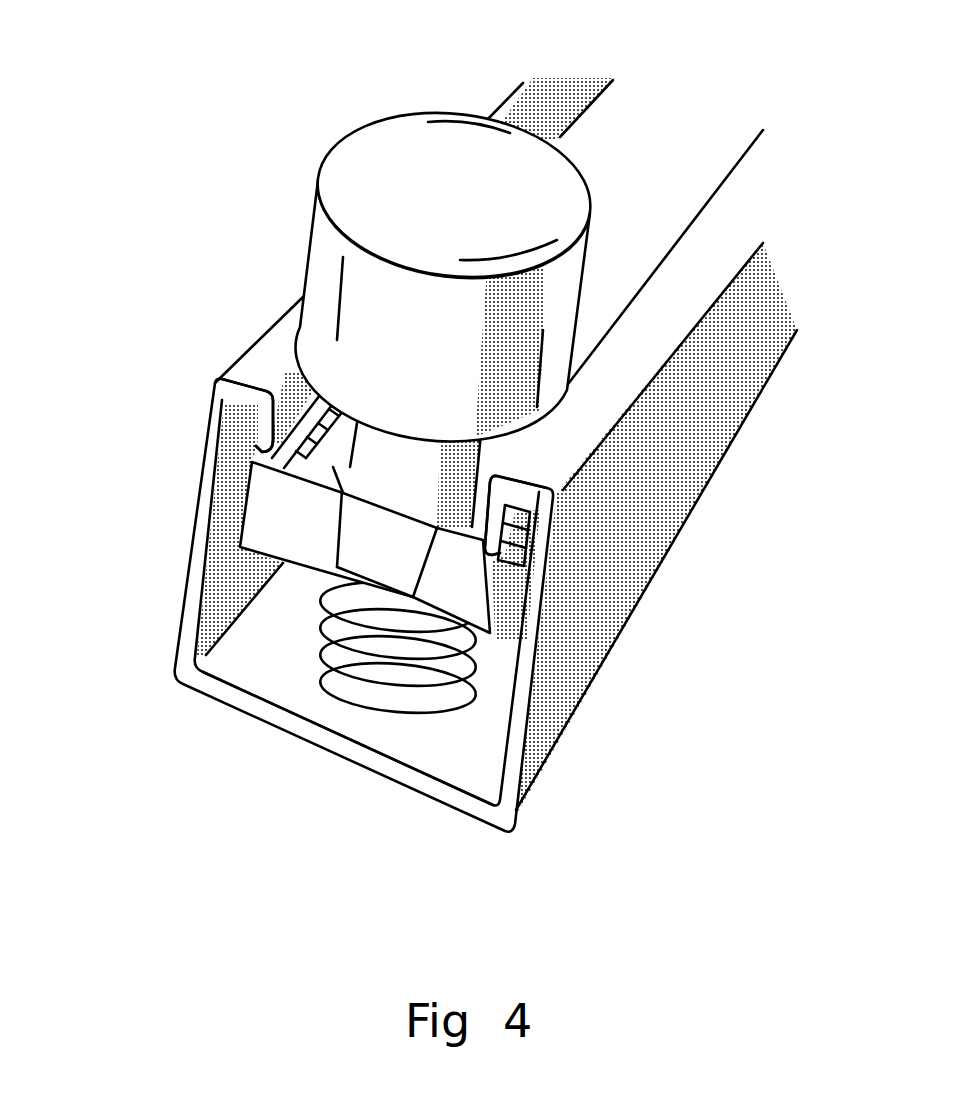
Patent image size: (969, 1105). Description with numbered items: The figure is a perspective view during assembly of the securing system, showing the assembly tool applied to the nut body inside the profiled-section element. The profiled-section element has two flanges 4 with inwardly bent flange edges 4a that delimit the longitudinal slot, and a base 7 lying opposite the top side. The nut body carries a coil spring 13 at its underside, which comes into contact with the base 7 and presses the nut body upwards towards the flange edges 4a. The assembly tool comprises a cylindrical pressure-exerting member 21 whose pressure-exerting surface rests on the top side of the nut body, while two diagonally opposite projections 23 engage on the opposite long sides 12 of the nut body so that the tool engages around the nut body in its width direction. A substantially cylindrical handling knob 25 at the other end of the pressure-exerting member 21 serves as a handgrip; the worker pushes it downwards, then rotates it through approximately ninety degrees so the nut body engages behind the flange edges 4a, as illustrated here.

The flange 4 is at (263, 353).
The inwardly bent flange edge 4a is at (267, 437).
The base 7 is at (282, 683).
The long side 12 is at (328, 551).
The coil spring 13 is at (362, 693).
The pressure-exerting member 21 is at (378, 455).
The projection 23 is at (365, 557).
The handling knob 25 is at (412, 143).